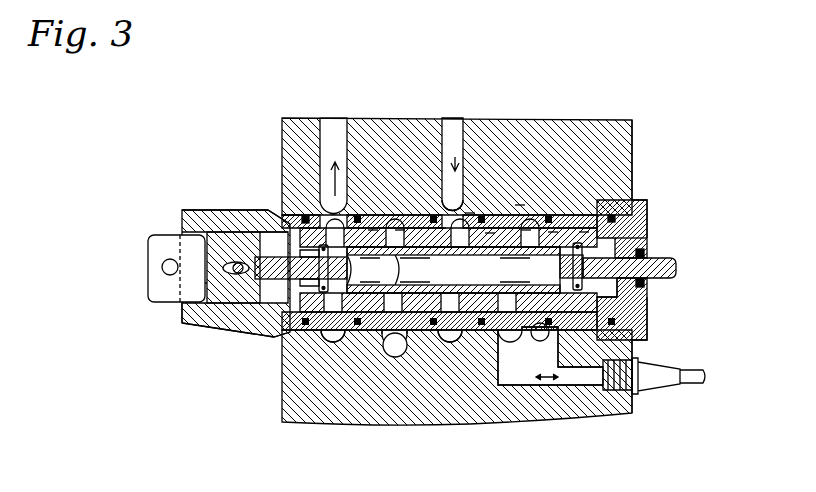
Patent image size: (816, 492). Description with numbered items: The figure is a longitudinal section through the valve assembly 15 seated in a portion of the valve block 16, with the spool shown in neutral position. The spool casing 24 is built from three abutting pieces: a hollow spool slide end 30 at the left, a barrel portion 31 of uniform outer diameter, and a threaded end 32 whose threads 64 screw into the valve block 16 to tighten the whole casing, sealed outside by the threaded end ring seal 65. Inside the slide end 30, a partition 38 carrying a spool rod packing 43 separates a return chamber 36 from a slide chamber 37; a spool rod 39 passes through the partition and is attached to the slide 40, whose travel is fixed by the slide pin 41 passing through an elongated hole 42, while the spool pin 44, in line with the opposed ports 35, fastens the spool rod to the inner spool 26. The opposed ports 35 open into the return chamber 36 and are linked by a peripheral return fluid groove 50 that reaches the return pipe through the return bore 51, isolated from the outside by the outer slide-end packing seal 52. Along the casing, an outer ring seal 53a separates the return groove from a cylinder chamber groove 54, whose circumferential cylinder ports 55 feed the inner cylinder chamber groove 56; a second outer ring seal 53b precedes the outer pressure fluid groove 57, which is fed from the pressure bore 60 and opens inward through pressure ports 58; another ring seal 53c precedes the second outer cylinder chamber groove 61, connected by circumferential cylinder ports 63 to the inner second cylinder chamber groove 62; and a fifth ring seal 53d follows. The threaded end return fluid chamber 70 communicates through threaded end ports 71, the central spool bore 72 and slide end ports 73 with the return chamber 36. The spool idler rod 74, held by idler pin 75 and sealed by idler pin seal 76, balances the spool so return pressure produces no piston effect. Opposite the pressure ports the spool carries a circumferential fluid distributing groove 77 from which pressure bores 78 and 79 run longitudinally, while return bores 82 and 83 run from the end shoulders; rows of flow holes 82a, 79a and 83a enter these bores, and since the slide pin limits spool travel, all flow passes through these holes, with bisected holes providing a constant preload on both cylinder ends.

The valve assembly 15 is at (218, 202).
The valve block 16 is at (306, 128).
The spool casing 24 is at (620, 196).
The inner spool 26 is at (509, 250).
The hollow spool slide end 30 is at (196, 212).
The barrel portion 31 is at (521, 200).
The threaded end 32 is at (650, 247).
The opposed ports 35 is at (340, 312).
The return chamber 36 is at (240, 325).
The slide chamber 37 is at (215, 323).
The partition 38 is at (270, 232).
The spool rod 39 is at (232, 293).
The slide 40 is at (205, 283).
The slide pin 41 is at (228, 269).
The elongated hole 42 is at (226, 256).
The spool rod packing 43 is at (262, 215).
The spool pin 44 is at (283, 331).
The peripheral return fluid groove 50 is at (327, 212).
The return bore 51 is at (333, 138).
The outer slide-end packing seal 52 is at (300, 214).
The outer ring seal 53a is at (323, 358).
The outer ring seal 53b is at (449, 369).
The ring seal 53c is at (488, 345).
The ring seal 53d is at (566, 347).
The cylinder chamber groove 54 is at (388, 347).
The circumferential cylinder ports 55 is at (409, 270).
The inner cylinder chamber groove 56 is at (362, 448).
The outer pressure fluid groove 57 is at (480, 214).
The pressure ports 58 is at (470, 212).
The pressure bore 60 is at (454, 126).
The second outer cylinder chamber groove 61 is at (541, 336).
The inner second cylinder chamber groove 62 is at (498, 345).
The circumferential cylinder ports 63 is at (530, 343).
The threads 64 is at (562, 373).
The threaded end ring seal 65 is at (648, 318).
The threaded end return fluid chamber 70 is at (638, 292).
The threaded end ports 71 is at (645, 218).
The central spool bore 72 is at (453, 270).
The slide end ports 73 is at (361, 270).
The spool idler rod 74 is at (677, 270).
The idler pin 75 is at (640, 240).
The idler pin seal 76 is at (649, 260).
The circumferential fluid distributing groove 77 is at (490, 230).
The pressure bores 78 is at (441, 226).
The pressure bores 79 is at (526, 228).
The flow holes 79a is at (553, 230).
The return bores 82 is at (372, 228).
The flow holes 82a is at (398, 228).
The return bores 83 is at (610, 212).
The flow holes 83a is at (584, 230).